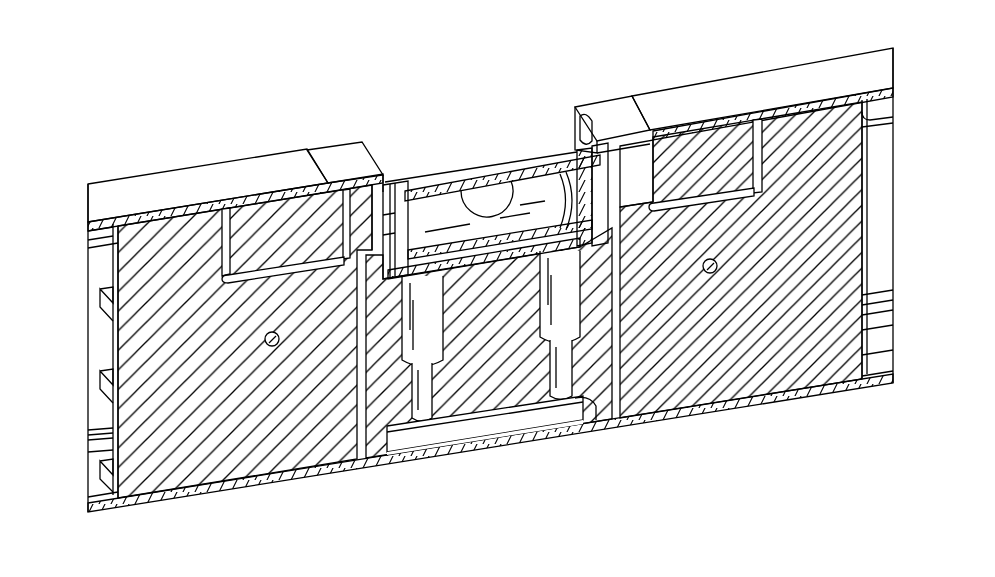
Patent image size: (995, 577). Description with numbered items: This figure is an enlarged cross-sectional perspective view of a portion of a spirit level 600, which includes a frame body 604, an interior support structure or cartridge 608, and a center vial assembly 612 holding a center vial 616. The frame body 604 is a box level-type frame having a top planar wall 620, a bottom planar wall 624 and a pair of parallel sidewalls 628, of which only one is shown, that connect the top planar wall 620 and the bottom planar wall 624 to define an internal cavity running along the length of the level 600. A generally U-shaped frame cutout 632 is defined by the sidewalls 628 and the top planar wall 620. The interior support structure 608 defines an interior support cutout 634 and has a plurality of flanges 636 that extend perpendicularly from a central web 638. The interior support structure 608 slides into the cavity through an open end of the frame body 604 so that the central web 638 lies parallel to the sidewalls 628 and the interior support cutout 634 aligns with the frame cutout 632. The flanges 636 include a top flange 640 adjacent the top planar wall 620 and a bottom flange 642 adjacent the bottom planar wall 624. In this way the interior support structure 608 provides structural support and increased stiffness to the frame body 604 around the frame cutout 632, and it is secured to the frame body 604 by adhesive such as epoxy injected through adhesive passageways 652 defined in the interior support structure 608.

The spirit level 600 is at (250, 44).
The frame body 604 is at (247, 146).
The interior support structure 608 is at (306, 470).
The center vial assembly 612 is at (439, 70).
The center vial 616 is at (510, 172).
The top planar wall 620 is at (190, 186).
The bottom planar wall 624 is at (250, 494).
The sidewalls 628 is at (100, 410).
The frame cutout 632 is at (332, 158).
The interior support cutout 634 is at (412, 262).
The flanges 636 is at (100, 302).
The central web 638 is at (122, 432).
The top flange 640 is at (113, 224).
The bottom flange 642 is at (108, 480).
The adhesive passageways 652 is at (360, 345).